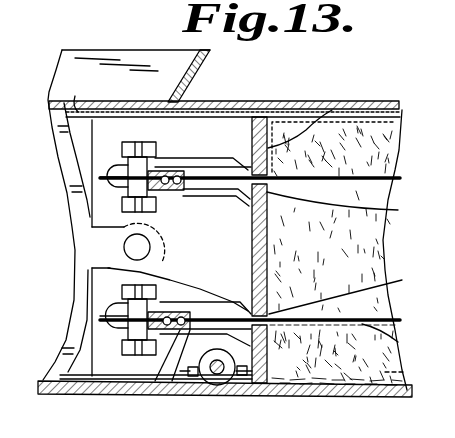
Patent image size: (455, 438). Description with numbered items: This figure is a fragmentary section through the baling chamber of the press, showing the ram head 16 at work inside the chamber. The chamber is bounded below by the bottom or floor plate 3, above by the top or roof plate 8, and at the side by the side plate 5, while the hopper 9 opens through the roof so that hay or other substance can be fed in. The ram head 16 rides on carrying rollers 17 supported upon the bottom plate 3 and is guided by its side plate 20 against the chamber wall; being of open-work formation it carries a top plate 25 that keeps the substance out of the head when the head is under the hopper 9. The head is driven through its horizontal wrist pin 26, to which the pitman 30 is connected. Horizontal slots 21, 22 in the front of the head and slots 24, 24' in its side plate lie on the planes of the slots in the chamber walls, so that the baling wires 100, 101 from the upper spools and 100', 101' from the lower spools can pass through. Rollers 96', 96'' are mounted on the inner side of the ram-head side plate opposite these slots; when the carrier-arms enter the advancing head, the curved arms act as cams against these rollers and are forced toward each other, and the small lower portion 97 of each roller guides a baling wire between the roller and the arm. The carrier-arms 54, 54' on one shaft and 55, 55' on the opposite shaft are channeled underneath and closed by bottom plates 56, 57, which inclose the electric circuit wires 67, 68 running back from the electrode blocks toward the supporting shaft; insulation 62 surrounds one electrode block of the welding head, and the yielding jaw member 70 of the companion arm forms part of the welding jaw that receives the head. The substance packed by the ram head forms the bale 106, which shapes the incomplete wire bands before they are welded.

The bottom plate 3 is at (62, 396).
The side plate 5 is at (50, 123).
The top plate 8 is at (305, 108).
The hopper 9 is at (105, 56).
The ram head 16 is at (330, 114).
The carrying roller 17 is at (211, 388).
The side plate of ram head 20 is at (102, 137).
The horizontal slot 21 is at (348, 293).
The horizontal slot 22 is at (385, 209).
The slot 24 is at (291, 412).
The slot 24' is at (209, 144).
The top plate of ram head 25 is at (76, 100).
The wrist pin 26 is at (124, 247).
The pitman 30 is at (90, 258).
The carrier-arm 54 is at (172, 292).
The carrier-arm 54' is at (166, 158).
The carrier-arm 55 is at (179, 307).
The carrier-arm 55' is at (243, 120).
The bottom plate 56 is at (173, 193).
The bottom plate 57 is at (210, 193).
The insulation 62 is at (445, 103).
The electric circuit wire 67 is at (155, 383).
The electric circuit wire 68 is at (172, 384).
The yielding jaw member 70 is at (445, 125).
The roller 96' is at (93, 320).
The roller 96'' is at (90, 177).
The lower roller portion 97 is at (120, 190).
The baling wire 100 is at (265, 164).
The baling wire 100' is at (269, 335).
The baling wire 101 is at (74, 179).
The baling wire 101' is at (73, 317).
The bale 106 is at (410, 373).